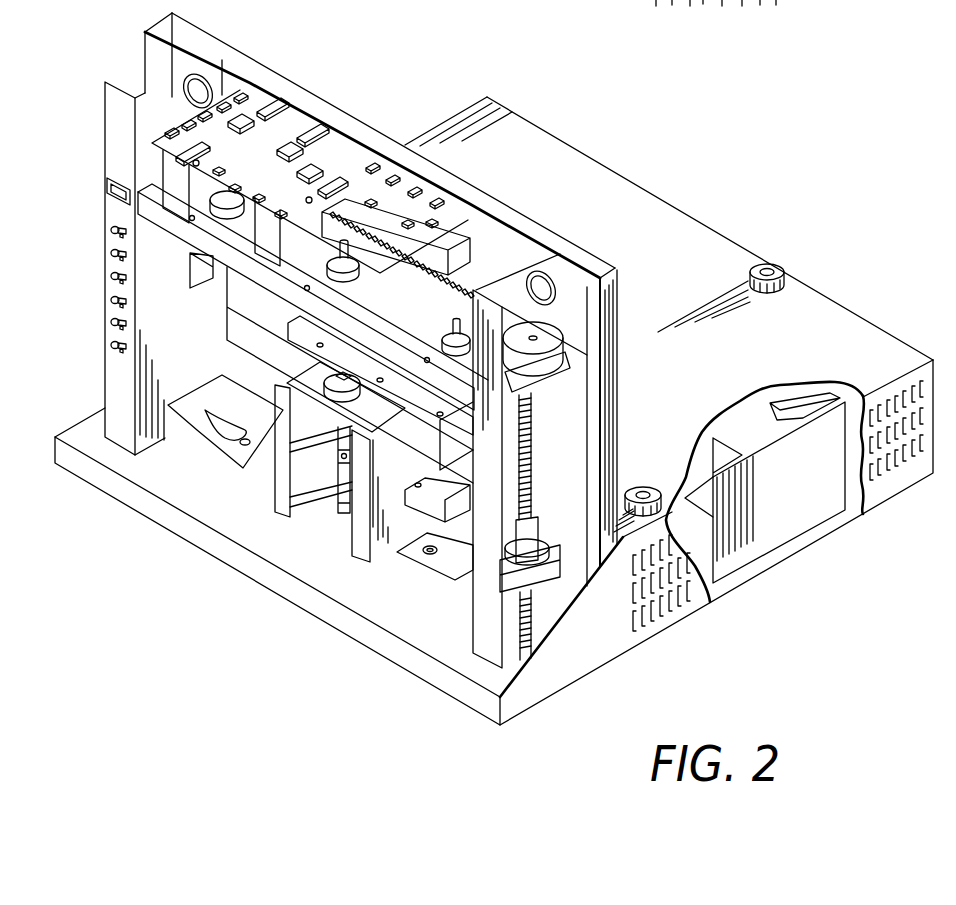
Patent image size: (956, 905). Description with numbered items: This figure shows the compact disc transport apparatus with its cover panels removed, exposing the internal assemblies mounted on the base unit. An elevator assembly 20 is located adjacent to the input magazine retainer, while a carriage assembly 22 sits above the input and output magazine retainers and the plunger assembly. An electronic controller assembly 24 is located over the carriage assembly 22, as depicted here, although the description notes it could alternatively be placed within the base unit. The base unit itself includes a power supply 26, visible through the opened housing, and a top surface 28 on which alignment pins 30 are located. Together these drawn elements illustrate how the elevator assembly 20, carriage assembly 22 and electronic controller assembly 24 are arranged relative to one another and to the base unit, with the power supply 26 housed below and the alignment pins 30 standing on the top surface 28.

The elevator assembly 20 is at (565, 440).
The carriage assembly 22 is at (187, 233).
The electronic controller assembly 24 is at (345, 162).
The power supply 26 is at (795, 517).
The top surface 28 is at (665, 256).
The alignment pins 30 is at (783, 264).